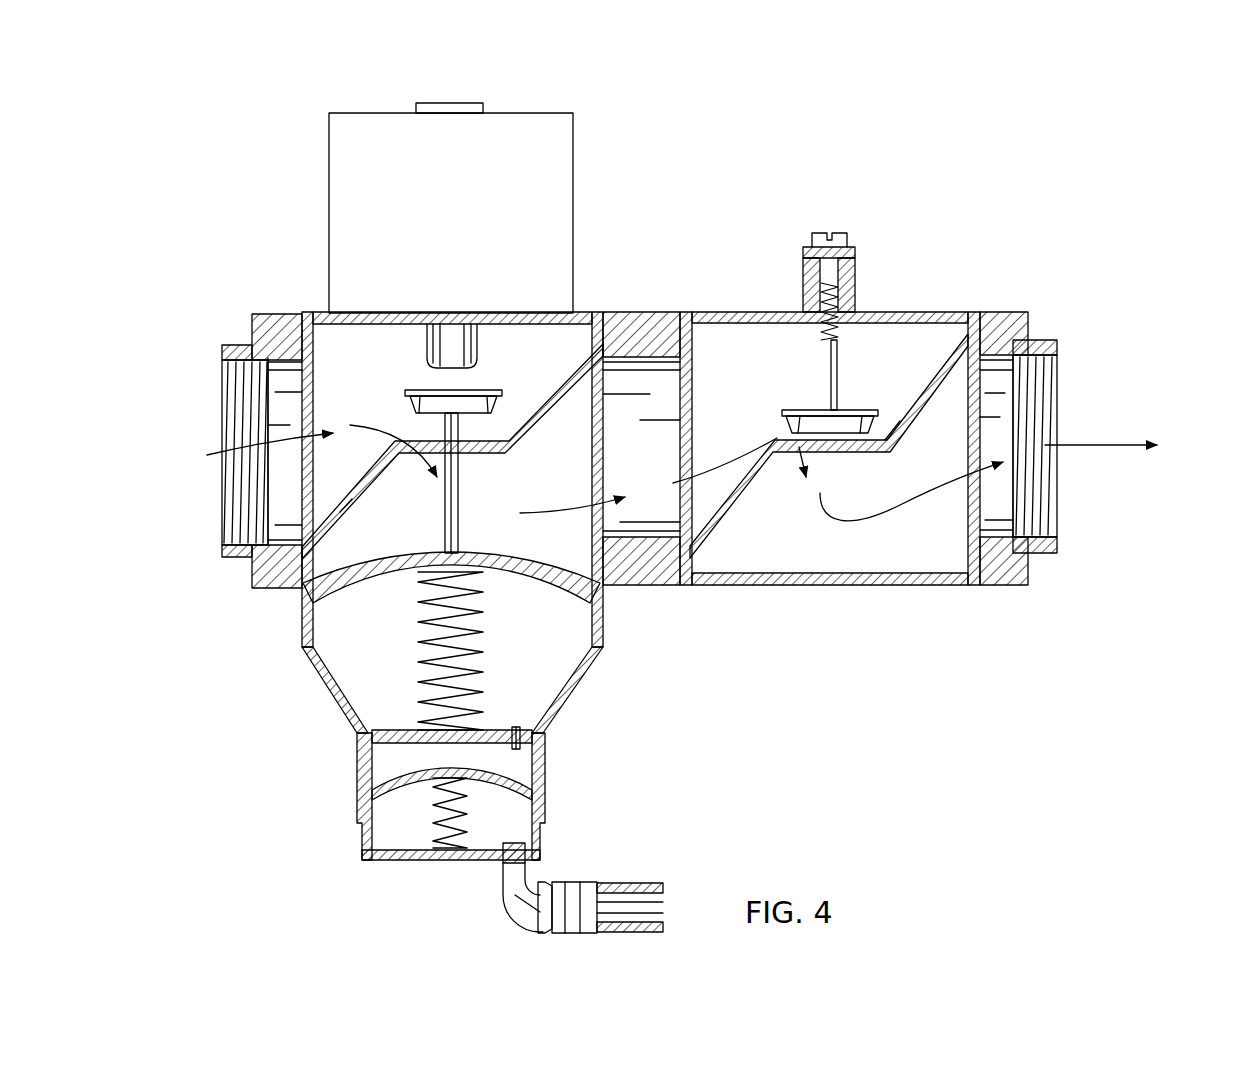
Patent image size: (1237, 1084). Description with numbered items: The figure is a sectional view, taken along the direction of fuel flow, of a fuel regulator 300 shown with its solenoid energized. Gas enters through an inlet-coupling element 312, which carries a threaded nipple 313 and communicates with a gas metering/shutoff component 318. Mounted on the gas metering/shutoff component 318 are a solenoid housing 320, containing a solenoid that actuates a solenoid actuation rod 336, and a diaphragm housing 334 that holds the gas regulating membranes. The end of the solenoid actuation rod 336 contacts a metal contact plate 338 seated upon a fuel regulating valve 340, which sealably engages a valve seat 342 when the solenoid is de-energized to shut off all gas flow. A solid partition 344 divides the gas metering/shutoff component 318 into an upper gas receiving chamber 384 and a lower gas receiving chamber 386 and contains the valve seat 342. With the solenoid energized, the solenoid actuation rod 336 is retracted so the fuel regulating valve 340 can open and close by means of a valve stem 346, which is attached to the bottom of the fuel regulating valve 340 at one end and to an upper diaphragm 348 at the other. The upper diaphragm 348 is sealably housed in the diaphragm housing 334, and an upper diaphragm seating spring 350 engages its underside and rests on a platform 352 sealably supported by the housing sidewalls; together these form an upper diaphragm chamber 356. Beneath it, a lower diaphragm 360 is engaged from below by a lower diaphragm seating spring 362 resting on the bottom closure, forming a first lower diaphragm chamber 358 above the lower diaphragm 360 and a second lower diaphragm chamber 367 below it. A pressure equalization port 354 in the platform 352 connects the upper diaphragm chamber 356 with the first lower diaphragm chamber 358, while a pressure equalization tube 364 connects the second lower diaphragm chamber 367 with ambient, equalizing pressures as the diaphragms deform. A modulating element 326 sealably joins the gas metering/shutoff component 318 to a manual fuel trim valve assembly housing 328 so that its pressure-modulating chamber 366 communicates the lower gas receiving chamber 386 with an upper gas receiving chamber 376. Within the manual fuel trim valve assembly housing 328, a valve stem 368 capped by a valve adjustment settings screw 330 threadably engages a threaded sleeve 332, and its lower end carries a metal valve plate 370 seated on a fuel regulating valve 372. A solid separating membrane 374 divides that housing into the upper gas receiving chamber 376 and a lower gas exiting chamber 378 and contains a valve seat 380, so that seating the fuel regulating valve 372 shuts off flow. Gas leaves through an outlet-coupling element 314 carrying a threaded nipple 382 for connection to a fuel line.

The fuel regulator 300 is at (889, 163).
The inlet-coupling element 312 is at (273, 312).
The threaded nipple 313 is at (253, 560).
The outlet-coupling element 314 is at (1028, 310).
The gas metering/shutoff component 318 is at (313, 311).
The solenoid housing 320 is at (577, 213).
The modulating element 326 is at (660, 309).
The manual fuel trim valve assembly housing 328 is at (935, 310).
The valve adjustment settings screw 330 is at (826, 233).
The threaded sleeve 332 is at (855, 283).
The diaphragm housing 334 is at (325, 698).
The solenoid actuation rod 336 is at (478, 335).
The metal contact plate 338 is at (428, 390).
The fuel regulating valve 340 is at (527, 383).
The valve seat 342 is at (507, 448).
The solid partition 344 is at (350, 505).
The valve stem 346 is at (459, 503).
The upper diaphragm 348 is at (515, 562).
The upper diaphragm seating spring 350 is at (480, 653).
The platform 352 is at (400, 730).
The pressure equalization port 354 is at (517, 727).
The upper diaphragm chamber 356 is at (409, 651).
The first lower diaphragm chamber 358 is at (414, 771).
The lower diaphragm 360 is at (521, 788).
The lower diaphragm seating spring 362 is at (437, 843).
The pressure equalization tube 364 is at (627, 883).
The pressure-modulating chamber 366 is at (664, 455).
The second lower diaphragm chamber 367 is at (419, 841).
The valve stem 368 is at (833, 368).
The metal valve plate 370 is at (812, 412).
The fuel regulating valve 372 is at (782, 421).
The solid separating membrane 374 is at (733, 503).
The upper gas receiving chamber 376 is at (744, 356).
The lower gas exiting chamber 378 is at (931, 560).
The valve seat 380 is at (884, 432).
The threaded nipple 382 is at (1057, 342).
The upper gas receiving chamber 384 is at (369, 396).
The lower gas receiving chamber 386 is at (576, 455).